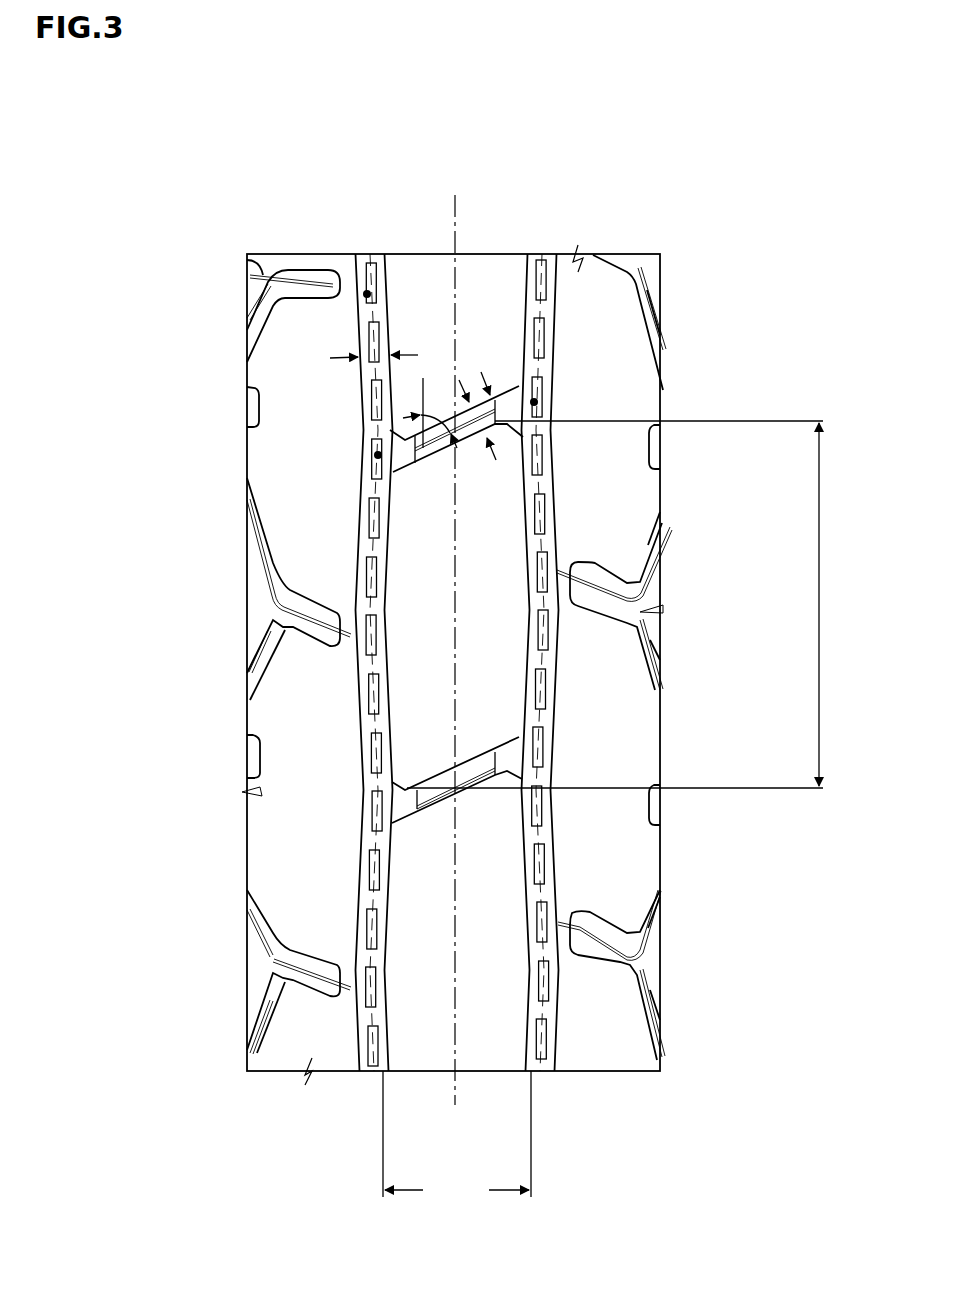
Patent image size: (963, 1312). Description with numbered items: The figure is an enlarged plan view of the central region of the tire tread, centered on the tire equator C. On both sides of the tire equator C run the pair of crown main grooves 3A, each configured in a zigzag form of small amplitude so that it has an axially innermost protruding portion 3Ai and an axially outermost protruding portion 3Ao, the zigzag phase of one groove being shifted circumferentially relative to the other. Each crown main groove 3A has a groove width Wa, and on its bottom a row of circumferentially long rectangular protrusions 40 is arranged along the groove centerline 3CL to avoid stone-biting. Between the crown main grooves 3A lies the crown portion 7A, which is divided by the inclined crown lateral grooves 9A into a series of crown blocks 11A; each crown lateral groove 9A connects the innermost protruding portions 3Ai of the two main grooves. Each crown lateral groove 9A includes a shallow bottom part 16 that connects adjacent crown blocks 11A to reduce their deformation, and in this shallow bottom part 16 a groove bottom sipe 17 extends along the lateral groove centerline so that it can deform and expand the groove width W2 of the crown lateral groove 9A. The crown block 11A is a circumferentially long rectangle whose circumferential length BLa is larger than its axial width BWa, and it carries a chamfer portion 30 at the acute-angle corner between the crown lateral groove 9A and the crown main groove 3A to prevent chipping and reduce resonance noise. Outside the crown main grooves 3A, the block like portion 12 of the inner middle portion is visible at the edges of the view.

The crown main groove 3A is at (372, 256).
The crown lateral groove 9A is at (484, 390).
The tire equator C is at (454, 636).
The axially outermost protruding portion 3Ao is at (365, 293).
The groove width of crown main groove Wa is at (353, 356).
The axially innermost protruding portion 3Ai is at (376, 456).
The groove width of crown lateral groove W2 is at (461, 380).
The crown block 11A is at (447, 628).
The circumferential length of crown block BLa is at (623, 604).
The shallow bottom part 16 is at (478, 762).
The groove bottom sipe 17 is at (548, 772).
The chamfer portion 30 is at (393, 795).
The groove centerline 3CL is at (373, 843).
The protrusion 40 is at (358, 932).
The block like portion 12 is at (540, 978).
The crown portion 7A is at (487, 1056).
The axial width of crown block BWa is at (457, 1138).